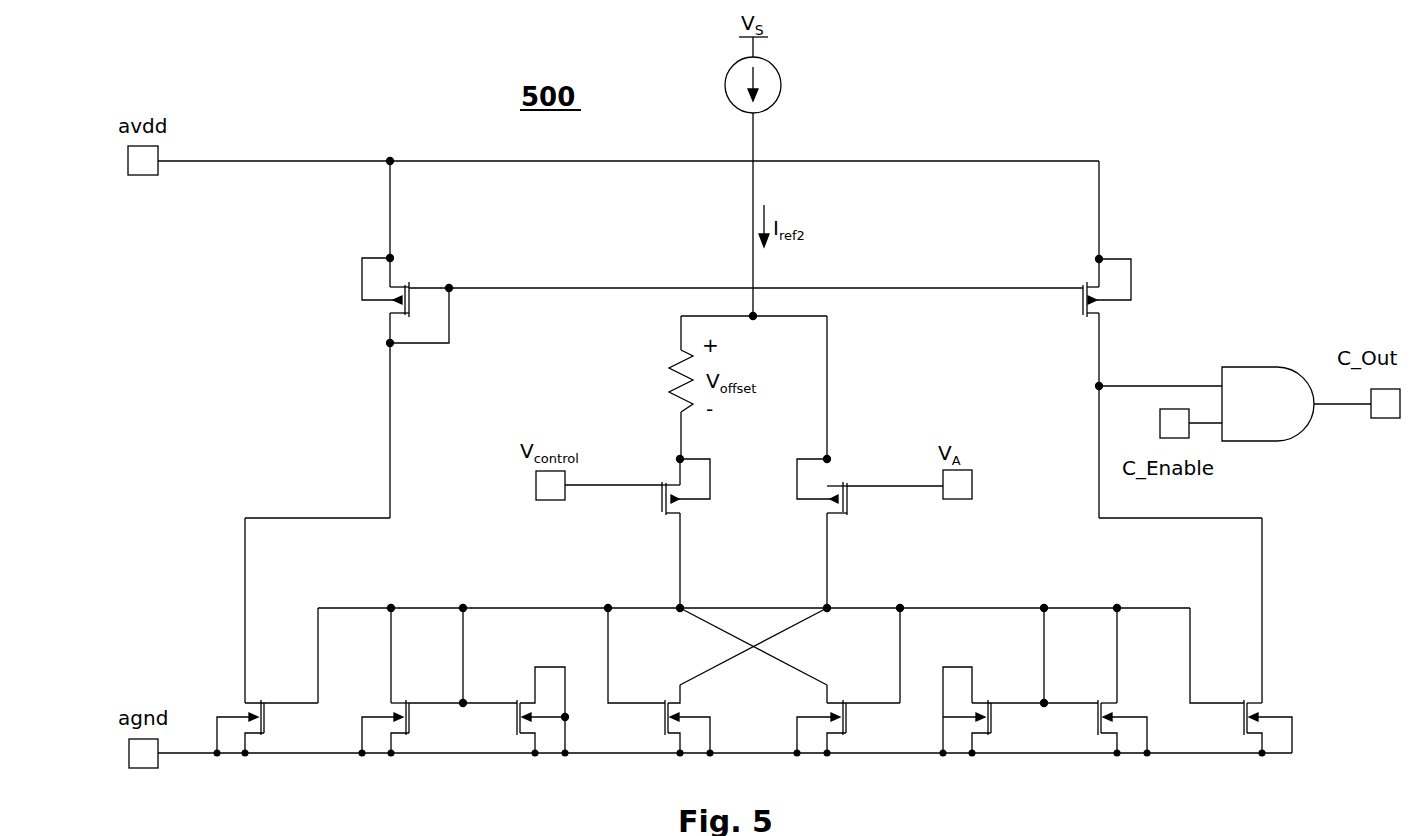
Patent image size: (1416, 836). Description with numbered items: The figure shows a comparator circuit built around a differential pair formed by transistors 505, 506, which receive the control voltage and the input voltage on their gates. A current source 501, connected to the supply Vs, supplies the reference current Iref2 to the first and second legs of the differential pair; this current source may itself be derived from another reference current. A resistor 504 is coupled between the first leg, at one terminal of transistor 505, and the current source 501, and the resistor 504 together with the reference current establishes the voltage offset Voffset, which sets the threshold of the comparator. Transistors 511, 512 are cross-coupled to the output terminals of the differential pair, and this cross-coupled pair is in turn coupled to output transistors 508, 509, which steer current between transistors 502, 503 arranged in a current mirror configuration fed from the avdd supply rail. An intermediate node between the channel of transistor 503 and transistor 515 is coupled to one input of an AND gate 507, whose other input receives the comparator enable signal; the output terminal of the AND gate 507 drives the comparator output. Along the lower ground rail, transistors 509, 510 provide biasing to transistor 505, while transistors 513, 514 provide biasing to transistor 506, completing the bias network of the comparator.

The current source 501 is at (783, 66).
The transistor 502 is at (402, 284).
The transistor 503 is at (1090, 285).
The resistor 504 is at (668, 386).
The transistor 505 is at (672, 478).
The transistor 506 is at (833, 480).
The AND gate 507 is at (1262, 364).
The output transistor 508 is at (255, 699).
The output transistor 509 is at (402, 699).
The transistor 510 is at (530, 699).
The transistor 511 is at (678, 699).
The transistor 512 is at (837, 699).
The transistor 513 is at (980, 699).
The transistor 514 is at (1113, 699).
The transistor 515 is at (1257, 699).